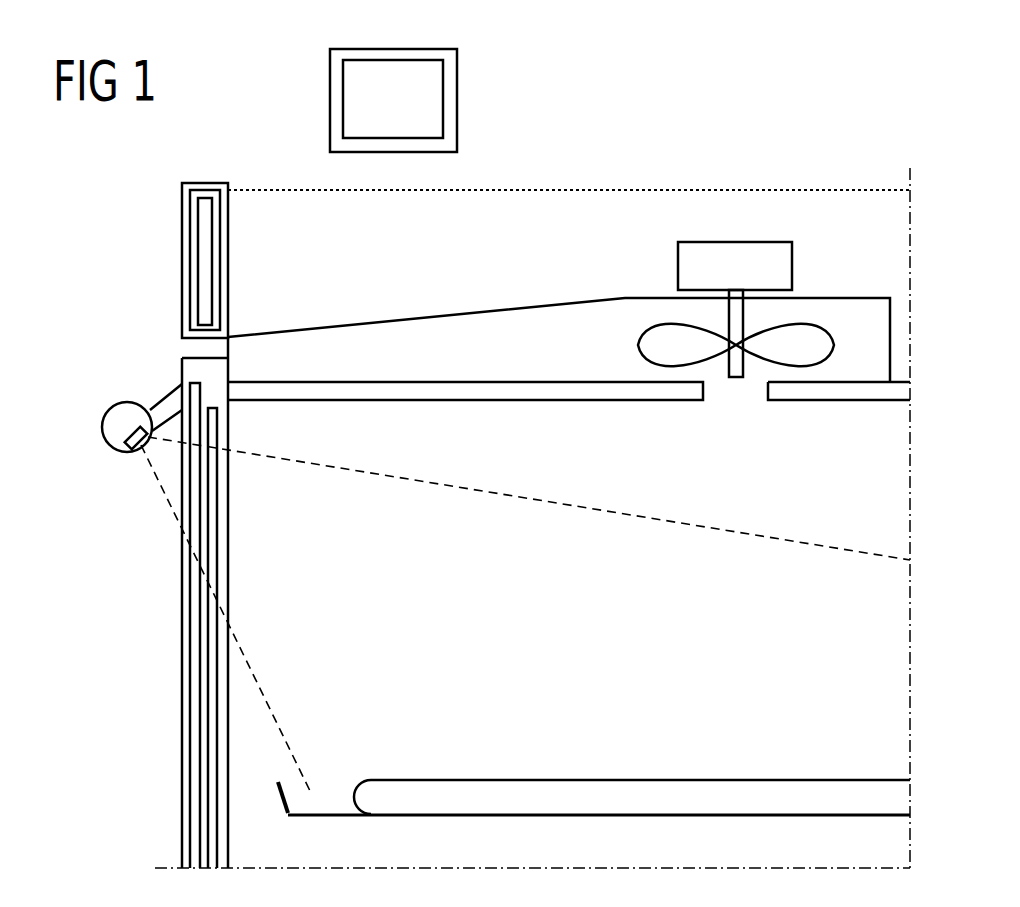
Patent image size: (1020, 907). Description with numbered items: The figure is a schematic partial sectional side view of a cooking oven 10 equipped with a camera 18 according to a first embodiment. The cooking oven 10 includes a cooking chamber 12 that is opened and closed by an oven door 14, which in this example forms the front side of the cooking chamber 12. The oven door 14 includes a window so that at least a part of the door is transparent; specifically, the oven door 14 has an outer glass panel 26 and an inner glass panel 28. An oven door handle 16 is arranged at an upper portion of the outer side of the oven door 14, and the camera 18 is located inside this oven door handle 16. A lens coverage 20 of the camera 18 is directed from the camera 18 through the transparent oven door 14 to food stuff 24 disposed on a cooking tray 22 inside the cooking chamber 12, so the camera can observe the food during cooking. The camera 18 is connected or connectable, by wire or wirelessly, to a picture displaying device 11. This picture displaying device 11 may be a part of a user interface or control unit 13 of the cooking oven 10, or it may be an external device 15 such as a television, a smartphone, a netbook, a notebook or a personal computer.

The cooking oven 10 is at (772, 146).
The picture displaying device 11 is at (443, 114).
The cooking chamber 12 is at (558, 643).
The user interface or control unit 13 is at (198, 190).
The oven door 14 is at (182, 810).
The external device 15 is at (345, 49).
The oven door handle 16 is at (115, 403).
The camera 18 is at (104, 427).
The lens coverage 20 is at (342, 470).
The cooking tray 22 is at (330, 813).
The food stuff 24 is at (648, 780).
The outer glass panel 26 is at (193, 645).
The inner glass panel 28 is at (213, 727).